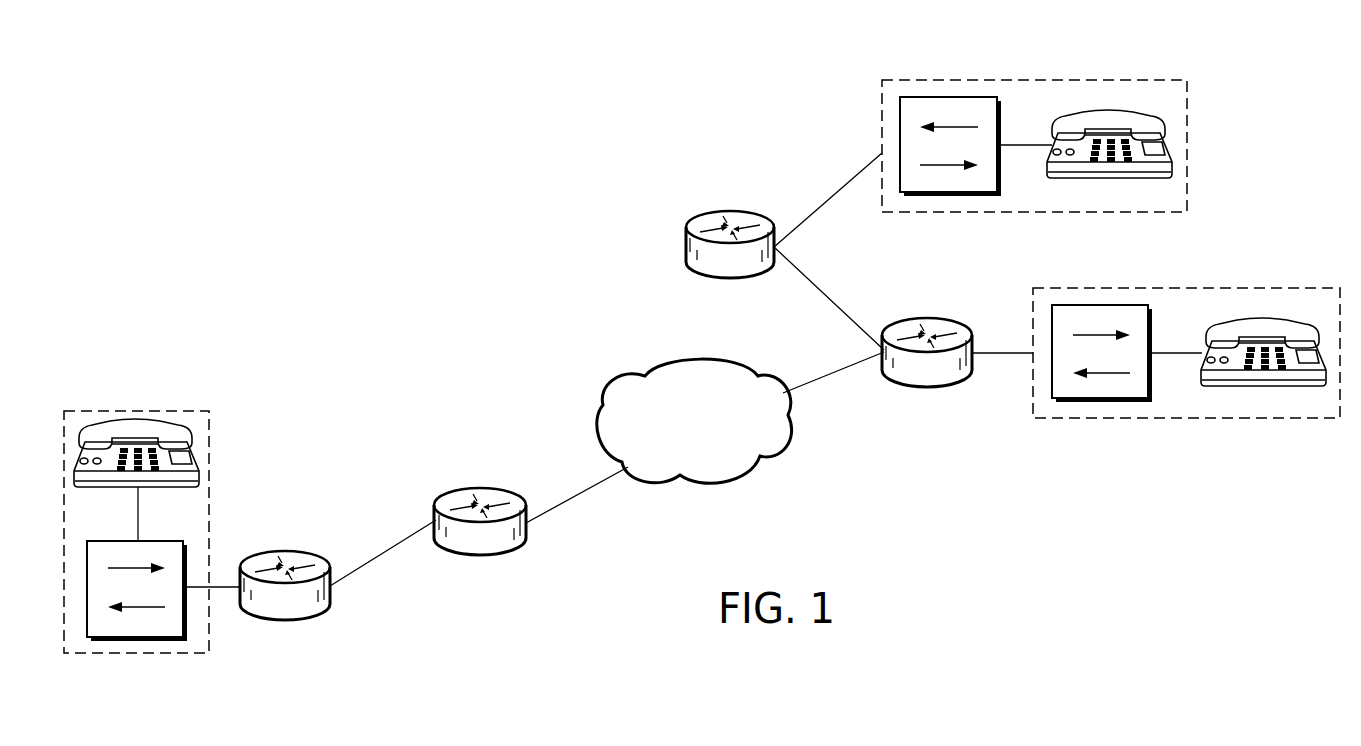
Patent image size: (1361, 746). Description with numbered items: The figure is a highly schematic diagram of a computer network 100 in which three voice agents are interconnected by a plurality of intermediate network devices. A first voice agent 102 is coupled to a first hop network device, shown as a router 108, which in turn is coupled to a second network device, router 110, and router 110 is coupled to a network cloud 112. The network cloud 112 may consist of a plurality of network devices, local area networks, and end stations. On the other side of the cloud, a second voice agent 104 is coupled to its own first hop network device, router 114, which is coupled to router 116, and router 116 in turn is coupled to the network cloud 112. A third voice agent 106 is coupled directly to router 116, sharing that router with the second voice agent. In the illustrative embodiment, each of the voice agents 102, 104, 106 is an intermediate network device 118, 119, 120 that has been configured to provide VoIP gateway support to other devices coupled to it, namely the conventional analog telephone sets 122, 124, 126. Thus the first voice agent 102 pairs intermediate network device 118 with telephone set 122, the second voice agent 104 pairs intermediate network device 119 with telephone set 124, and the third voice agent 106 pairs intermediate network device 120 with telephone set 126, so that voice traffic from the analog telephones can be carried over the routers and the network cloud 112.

The computer network 100 is at (518, 222).
The first voice agent 102 is at (138, 409).
The second voice agent 104 is at (1067, 81).
The third voice agent 106 is at (1227, 289).
The router 108 is at (285, 622).
The router 110 is at (480, 556).
The network cloud 112 is at (735, 484).
The router 114 is at (730, 279).
The router 116 is at (927, 388).
The intermediate network device 118 is at (150, 654).
The intermediate network device 119 is at (925, 194).
The intermediate network device 120 is at (1080, 400).
The conventional analog telephone set 122 is at (197, 440).
The conventional analog telephone set 124 is at (1080, 179).
The conventional analog telephone set 126 is at (1232, 386).